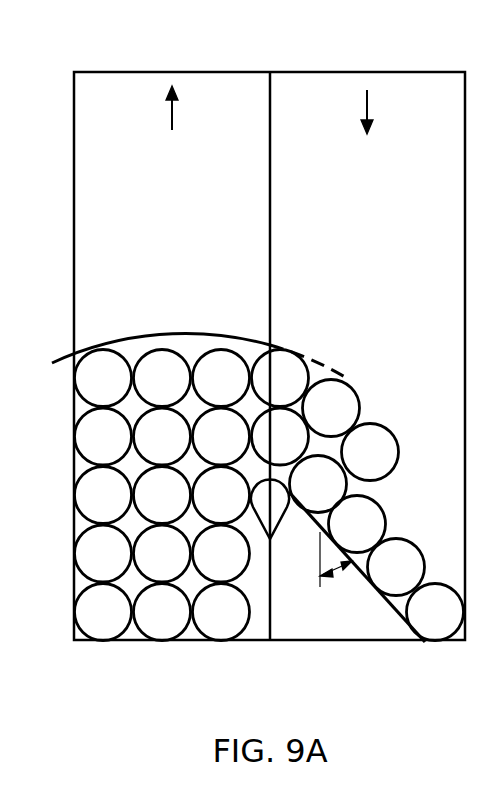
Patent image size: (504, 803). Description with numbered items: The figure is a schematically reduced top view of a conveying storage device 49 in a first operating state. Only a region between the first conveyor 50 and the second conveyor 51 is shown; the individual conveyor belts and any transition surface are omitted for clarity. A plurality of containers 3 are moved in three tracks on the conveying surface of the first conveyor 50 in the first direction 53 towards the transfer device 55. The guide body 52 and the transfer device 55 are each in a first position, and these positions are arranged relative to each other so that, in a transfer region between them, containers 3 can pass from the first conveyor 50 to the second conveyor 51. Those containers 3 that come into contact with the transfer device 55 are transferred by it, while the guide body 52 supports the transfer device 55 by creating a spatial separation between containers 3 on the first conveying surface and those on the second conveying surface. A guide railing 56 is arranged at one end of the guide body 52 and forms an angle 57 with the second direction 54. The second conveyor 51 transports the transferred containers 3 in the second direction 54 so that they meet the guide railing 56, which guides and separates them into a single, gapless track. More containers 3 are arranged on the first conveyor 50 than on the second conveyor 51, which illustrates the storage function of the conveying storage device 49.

The conveying storage device 49 is at (165, 36).
The first conveyor 50 is at (72, 185).
The second conveyor 51 is at (466, 273).
The first direction 53 is at (173, 112).
The second direction 54 is at (369, 106).
The transfer device 55 is at (141, 338).
The containers 3 is at (103, 628).
The guide body 52 is at (283, 540).
The guide railing 56 is at (393, 620).
The angle 57 is at (338, 576).